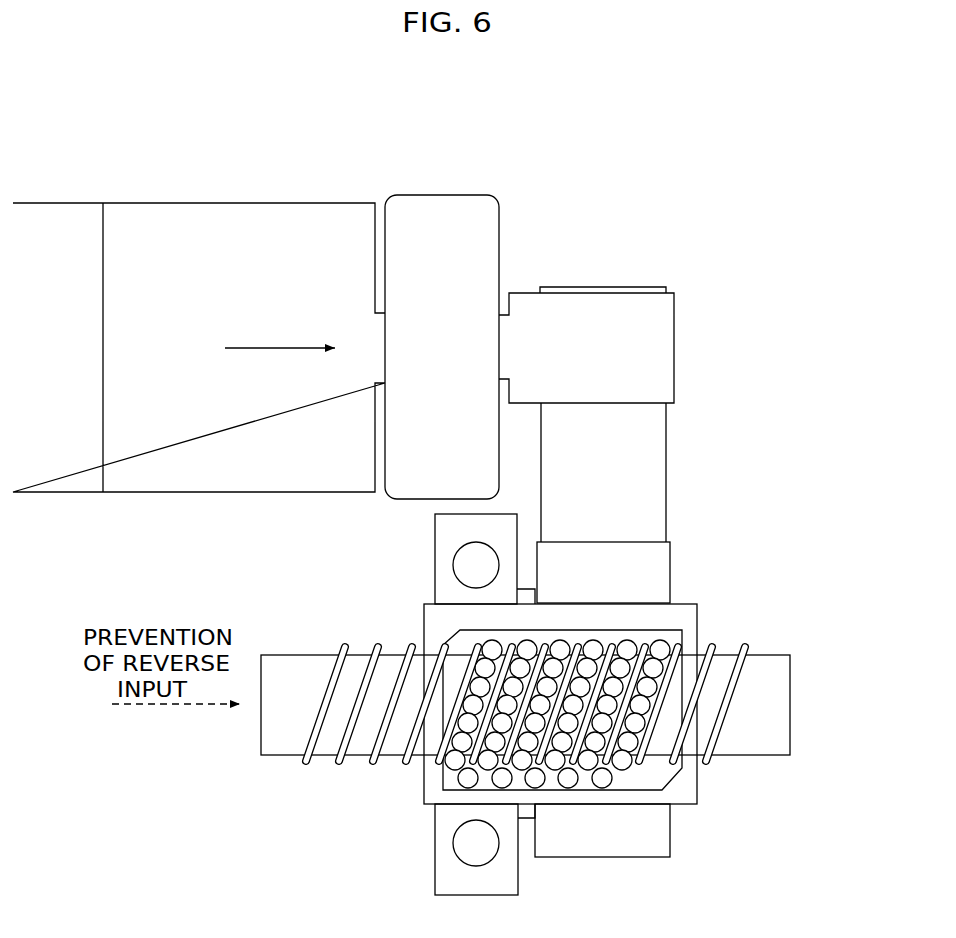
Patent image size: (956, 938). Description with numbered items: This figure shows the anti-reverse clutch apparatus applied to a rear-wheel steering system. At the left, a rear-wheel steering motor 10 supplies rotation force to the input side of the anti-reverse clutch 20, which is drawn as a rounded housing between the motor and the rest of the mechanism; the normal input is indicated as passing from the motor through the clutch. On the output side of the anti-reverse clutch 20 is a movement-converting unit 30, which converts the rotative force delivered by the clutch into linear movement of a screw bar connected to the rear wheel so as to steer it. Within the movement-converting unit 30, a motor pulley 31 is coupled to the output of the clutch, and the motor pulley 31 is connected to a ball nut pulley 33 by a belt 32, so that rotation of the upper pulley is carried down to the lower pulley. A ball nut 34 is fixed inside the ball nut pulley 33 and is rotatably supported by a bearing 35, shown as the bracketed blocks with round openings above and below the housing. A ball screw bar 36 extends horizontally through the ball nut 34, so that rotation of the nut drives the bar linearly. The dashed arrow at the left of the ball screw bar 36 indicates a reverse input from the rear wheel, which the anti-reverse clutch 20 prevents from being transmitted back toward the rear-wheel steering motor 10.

The rear-wheel steering motor 10 is at (212, 228).
The anti-reverse clutch 20 is at (433, 192).
The movement-converting unit 30 is at (572, 545).
The motor pulley 31 is at (605, 322).
The belt 32 is at (643, 482).
The ball nut pulley 33 is at (657, 567).
The ball nut 34 is at (680, 617).
The bearing 35 is at (447, 542).
The ball screw bar 36 is at (770, 712).